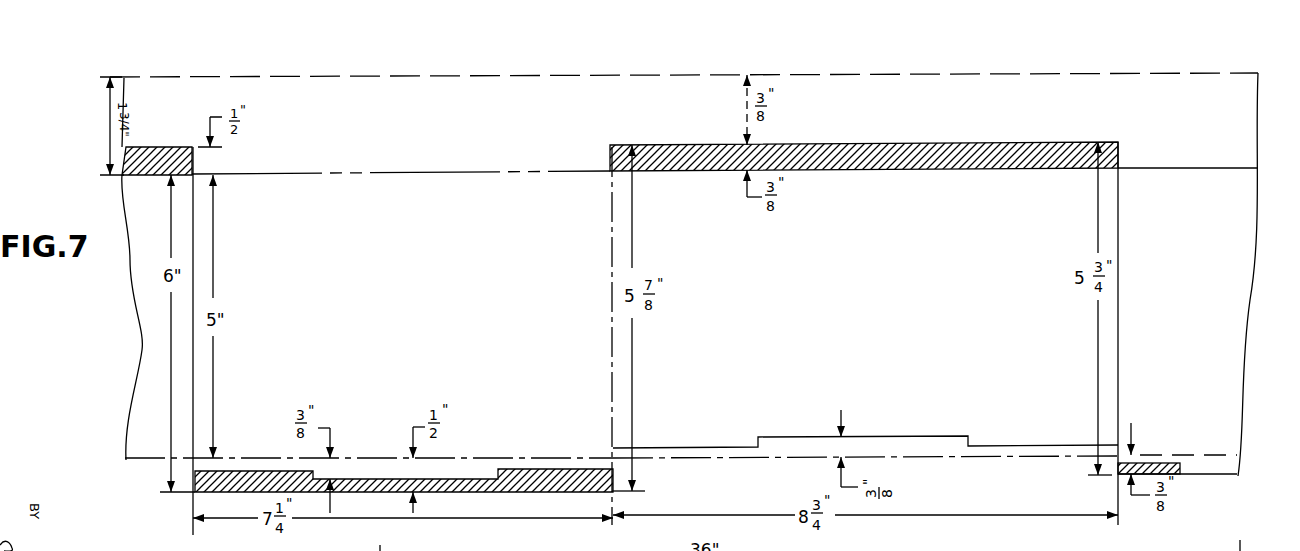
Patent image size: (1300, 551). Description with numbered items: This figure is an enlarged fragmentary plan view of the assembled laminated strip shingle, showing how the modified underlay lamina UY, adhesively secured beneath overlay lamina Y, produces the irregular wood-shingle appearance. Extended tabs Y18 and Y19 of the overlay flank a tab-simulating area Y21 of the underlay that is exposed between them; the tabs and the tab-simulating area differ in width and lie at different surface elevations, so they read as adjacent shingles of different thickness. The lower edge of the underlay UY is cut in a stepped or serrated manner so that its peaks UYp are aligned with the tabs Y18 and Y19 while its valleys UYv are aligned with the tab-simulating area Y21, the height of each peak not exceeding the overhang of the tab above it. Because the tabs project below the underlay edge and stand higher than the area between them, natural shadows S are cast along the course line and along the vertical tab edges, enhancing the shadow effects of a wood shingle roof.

The modified underlay lamina UY is at (684, 103).
The extended tab Y18 is at (426, 329).
The tab-simulating area Y21 is at (842, 332).
The extended tab Y19 is at (1214, 374).
The peak of stepped cut UYp is at (462, 470).
The valley of stepped cut UYv is at (912, 447).
The shadow S is at (168, 165).